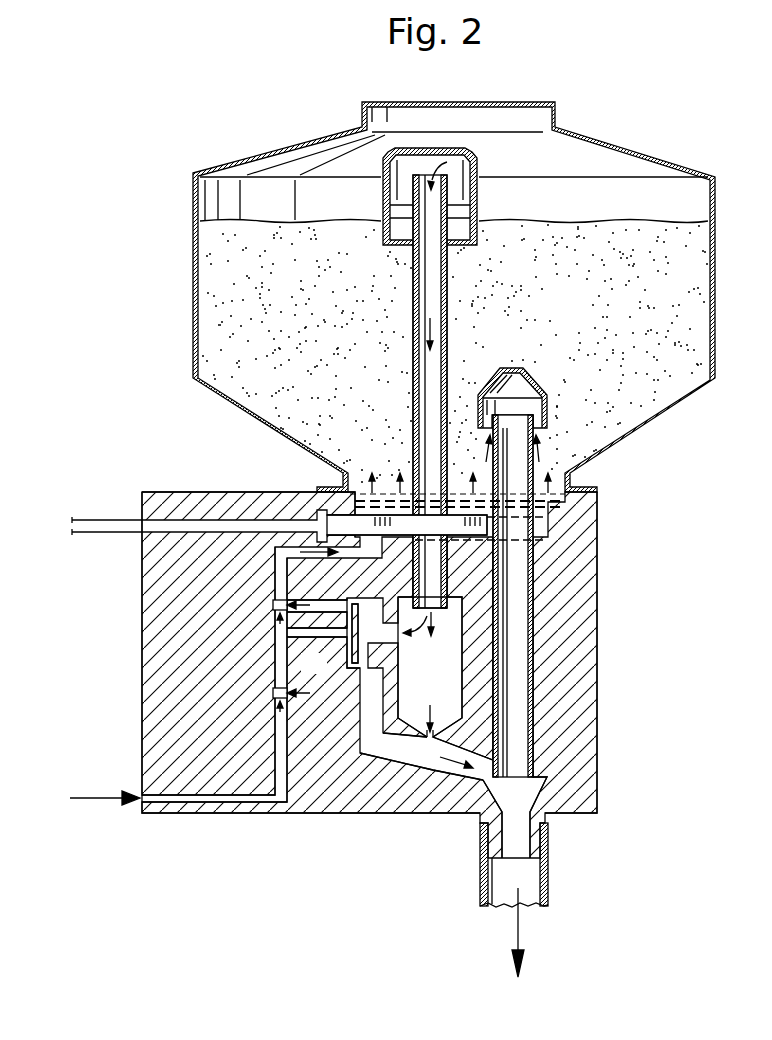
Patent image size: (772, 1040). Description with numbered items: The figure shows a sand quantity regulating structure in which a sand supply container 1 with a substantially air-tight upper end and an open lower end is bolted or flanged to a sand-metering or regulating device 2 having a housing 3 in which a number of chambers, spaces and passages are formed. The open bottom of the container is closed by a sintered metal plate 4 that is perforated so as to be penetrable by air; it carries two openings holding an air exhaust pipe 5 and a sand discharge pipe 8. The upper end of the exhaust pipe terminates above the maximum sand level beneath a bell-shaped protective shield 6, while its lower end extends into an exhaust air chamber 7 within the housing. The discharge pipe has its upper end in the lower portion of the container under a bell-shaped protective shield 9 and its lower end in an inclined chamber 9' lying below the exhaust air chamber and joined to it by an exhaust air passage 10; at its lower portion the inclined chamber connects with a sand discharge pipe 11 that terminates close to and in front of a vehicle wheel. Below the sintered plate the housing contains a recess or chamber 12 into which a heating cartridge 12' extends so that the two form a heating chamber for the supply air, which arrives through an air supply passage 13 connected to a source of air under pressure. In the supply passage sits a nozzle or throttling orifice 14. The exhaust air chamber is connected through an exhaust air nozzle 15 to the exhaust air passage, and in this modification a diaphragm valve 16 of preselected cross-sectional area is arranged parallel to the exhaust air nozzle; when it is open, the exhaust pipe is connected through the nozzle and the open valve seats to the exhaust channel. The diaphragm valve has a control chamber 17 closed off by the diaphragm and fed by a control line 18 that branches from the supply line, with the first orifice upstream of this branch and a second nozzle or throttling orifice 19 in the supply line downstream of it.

The sand supply container 1 is at (671, 190).
The sand-metering or regulating device 2 is at (620, 678).
The housing 3 is at (597, 737).
The sintered metal plate 4 is at (462, 482).
The air exhaust pipe 5 is at (423, 347).
The bell-shaped protective shield 6 is at (480, 161).
The exhaust air chamber 7 is at (430, 667).
The sand discharge pipe 8 is at (523, 590).
The bell-shaped protective shield 9 is at (520, 383).
The chamber 9' is at (541, 817).
The exhaust air passage 10 is at (460, 770).
The sand discharge pipe 11 is at (533, 884).
The recess or chamber 12 is at (351, 535).
The heating cartridge or element 12' is at (407, 487).
The air supply passage 13 is at (200, 800).
The nozzle or throttling orifice 14 is at (273, 692).
The exhaust air nozzle 15 is at (427, 745).
The diaphragm valve 16 is at (352, 660).
The control chamber 17 is at (350, 605).
The control line 18 is at (322, 638).
The second nozzle or throttling orifice 19 is at (273, 605).